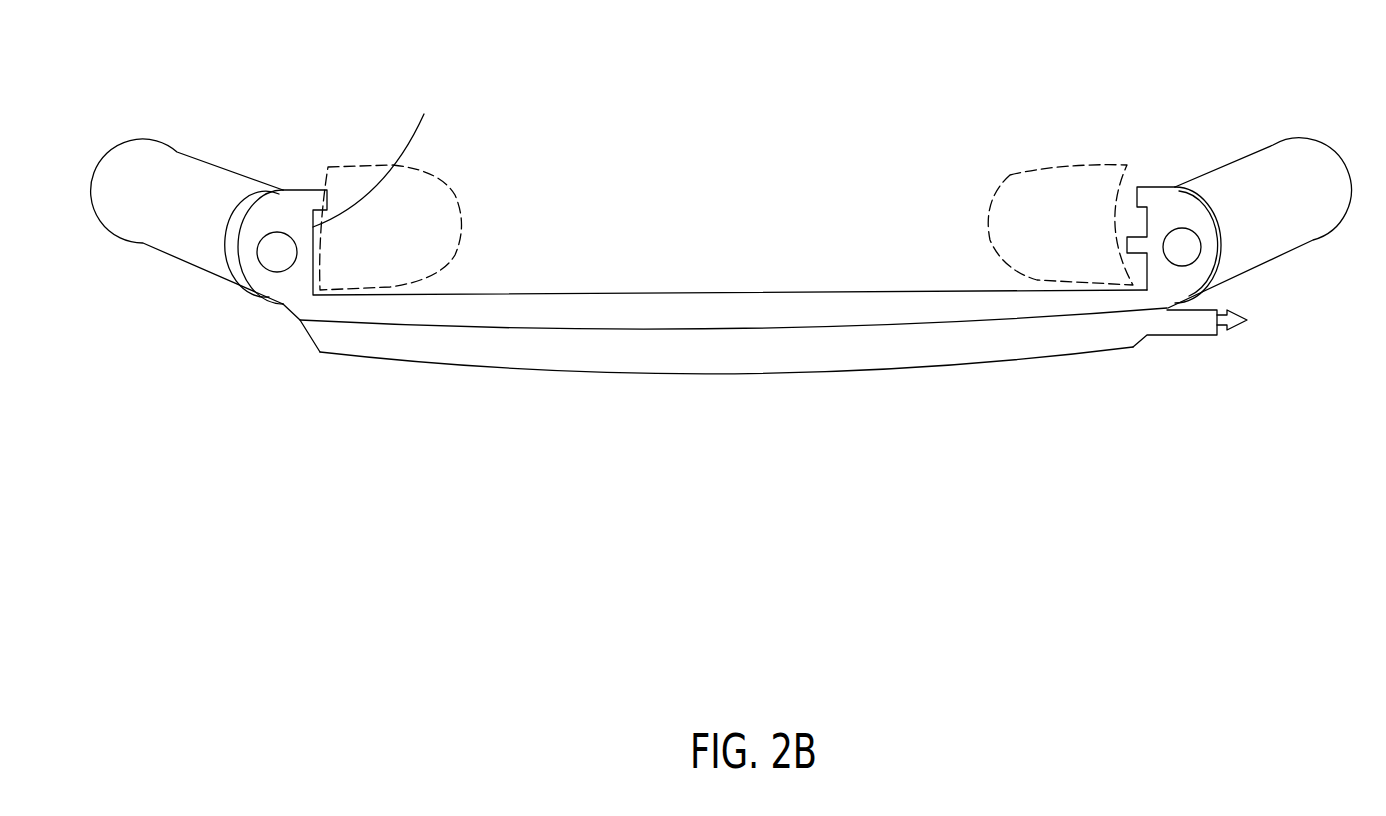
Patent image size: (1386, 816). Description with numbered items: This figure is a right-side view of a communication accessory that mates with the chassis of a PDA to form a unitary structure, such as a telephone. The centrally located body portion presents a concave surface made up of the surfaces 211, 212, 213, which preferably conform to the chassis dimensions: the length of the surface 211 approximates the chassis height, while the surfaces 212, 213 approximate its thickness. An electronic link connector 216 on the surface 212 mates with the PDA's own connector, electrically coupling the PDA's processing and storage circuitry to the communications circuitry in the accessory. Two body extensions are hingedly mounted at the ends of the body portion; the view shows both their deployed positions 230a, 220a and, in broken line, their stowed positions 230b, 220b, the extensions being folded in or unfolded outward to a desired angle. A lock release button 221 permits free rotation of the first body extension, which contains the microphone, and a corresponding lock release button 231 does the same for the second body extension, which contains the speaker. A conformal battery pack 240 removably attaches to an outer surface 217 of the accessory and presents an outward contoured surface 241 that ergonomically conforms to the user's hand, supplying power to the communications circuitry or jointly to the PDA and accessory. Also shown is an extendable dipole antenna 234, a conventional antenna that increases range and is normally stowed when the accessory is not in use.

The surface 211 is at (680, 292).
The surface 212 is at (1131, 185).
The surface 213 is at (424, 114).
The electronic link connector 216 is at (1137, 255).
The outer surface 217 is at (880, 330).
The deployed position of first body extension 220a is at (177, 152).
The stowed position of first body extension 220b is at (443, 178).
The lock release button 221 is at (273, 256).
The deployed position of second body extension 230a is at (1297, 147).
The stowed position of second body extension 230b is at (1093, 160).
The lock release button 231 is at (1180, 248).
The extendable dipole antenna 234 is at (1240, 323).
The conformal battery pack 240 is at (725, 382).
The outward contoured surface 241 is at (607, 375).